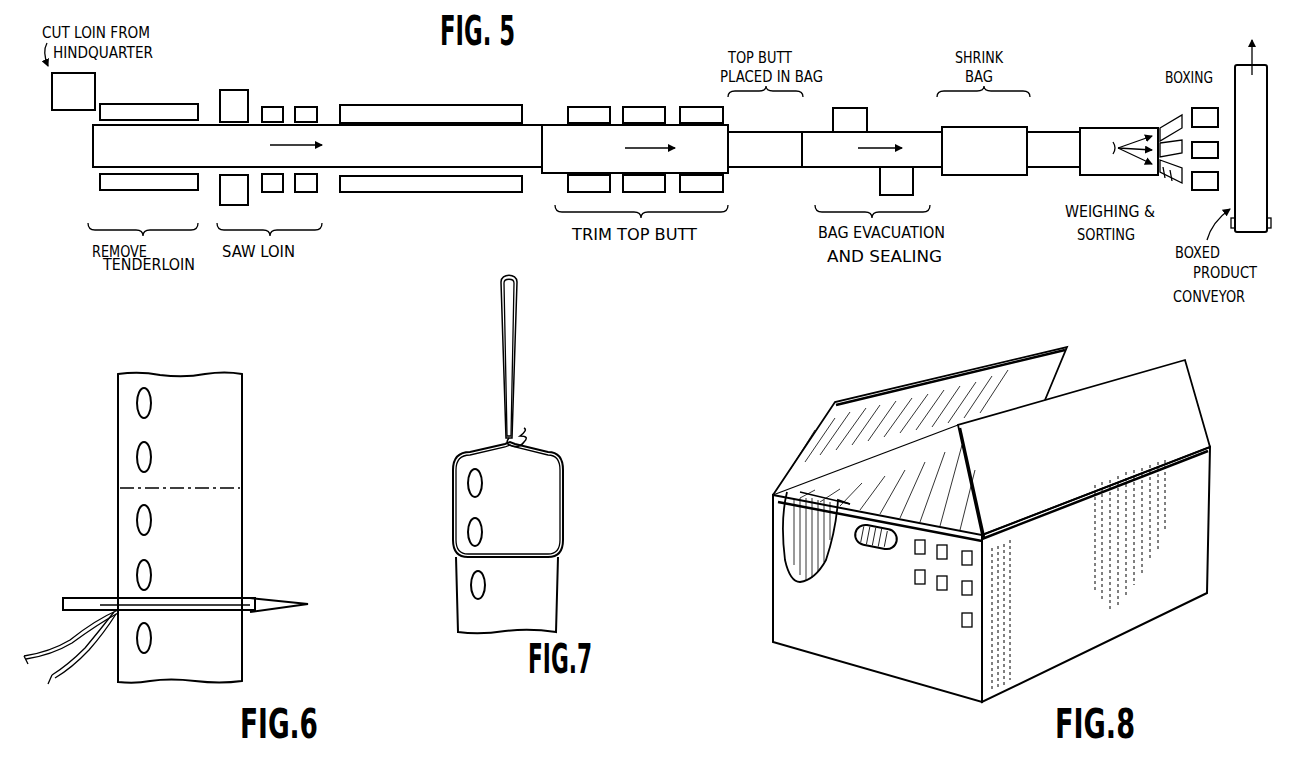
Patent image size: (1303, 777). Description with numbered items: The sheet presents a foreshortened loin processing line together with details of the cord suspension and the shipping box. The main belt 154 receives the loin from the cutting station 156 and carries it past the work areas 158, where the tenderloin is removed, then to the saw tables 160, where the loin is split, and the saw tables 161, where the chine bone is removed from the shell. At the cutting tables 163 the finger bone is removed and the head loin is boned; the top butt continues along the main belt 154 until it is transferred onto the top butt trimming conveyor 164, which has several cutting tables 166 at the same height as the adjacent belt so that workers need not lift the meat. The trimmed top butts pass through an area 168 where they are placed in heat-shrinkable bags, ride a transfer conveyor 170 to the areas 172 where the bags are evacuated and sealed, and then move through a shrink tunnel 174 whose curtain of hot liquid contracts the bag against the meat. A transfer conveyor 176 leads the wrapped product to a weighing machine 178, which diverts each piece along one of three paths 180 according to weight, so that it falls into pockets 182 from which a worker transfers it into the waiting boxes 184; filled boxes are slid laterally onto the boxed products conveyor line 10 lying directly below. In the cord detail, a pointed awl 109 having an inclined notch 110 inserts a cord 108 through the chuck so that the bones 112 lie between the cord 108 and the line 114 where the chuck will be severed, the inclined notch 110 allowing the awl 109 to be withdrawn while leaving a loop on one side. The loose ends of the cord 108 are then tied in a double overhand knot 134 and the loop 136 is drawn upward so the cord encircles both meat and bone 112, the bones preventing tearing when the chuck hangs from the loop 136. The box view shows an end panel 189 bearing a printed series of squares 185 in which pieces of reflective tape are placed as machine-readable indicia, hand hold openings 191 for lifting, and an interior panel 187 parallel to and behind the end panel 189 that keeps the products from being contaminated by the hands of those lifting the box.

In FIG. 5, the boxed products conveyor line 10 is at (1257, 194).
In FIG. 5, the main belt 154 is at (483, 159).
In FIG. 5, the cutting station 156 is at (80, 92).
In FIG. 5, the work areas 158 is at (186, 104).
In FIG. 5, the saw tables 160 is at (238, 98).
In FIG. 5, the saw tables 161 is at (303, 107).
In FIG. 5, the cutting tables 163 is at (405, 108).
In FIG. 5, the top butt trimming conveyor 164 is at (601, 159).
In FIG. 5, the cutting tables 166 is at (685, 109).
In FIG. 5, the bagging area 168 is at (780, 158).
In FIG. 5, the transfer conveyor 170 is at (846, 158).
In FIG. 5, the evacuating and sealing areas 172 is at (856, 118).
In FIG. 5, the shrink tunnel 174 is at (990, 158).
In FIG. 5, the transfer conveyor 176 is at (1063, 159).
In FIG. 5, the weighing machine 178 is at (1093, 138).
In FIG. 5, the paths 180 is at (1135, 137).
In FIG. 5, the pockets 182 is at (1178, 182).
In FIG. 5, the boxes 184 is at (1218, 119).
In FIG. 6, the cord 108 is at (72, 668).
In FIG. 7, the cord 108 is at (563, 527).
In FIG. 6, the pointed awl 109 is at (88, 600).
In FIG. 6, the inclined notch 110 is at (267, 600).
In FIG. 6, the bones 112 is at (148, 522).
In FIG. 7, the bones 112 is at (482, 490).
In FIG. 6, the line 114 is at (210, 489).
In FIG. 7, the double overhand knot 134 is at (518, 437).
In FIG. 7, the loop 136 is at (517, 322).
In FIG. 8, the printed squares 185 is at (960, 620).
In FIG. 8, the interior panel 187 is at (840, 500).
In FIG. 8, the end panel 189 is at (780, 605).
In FIG. 8, the hand hold openings 191 is at (875, 540).